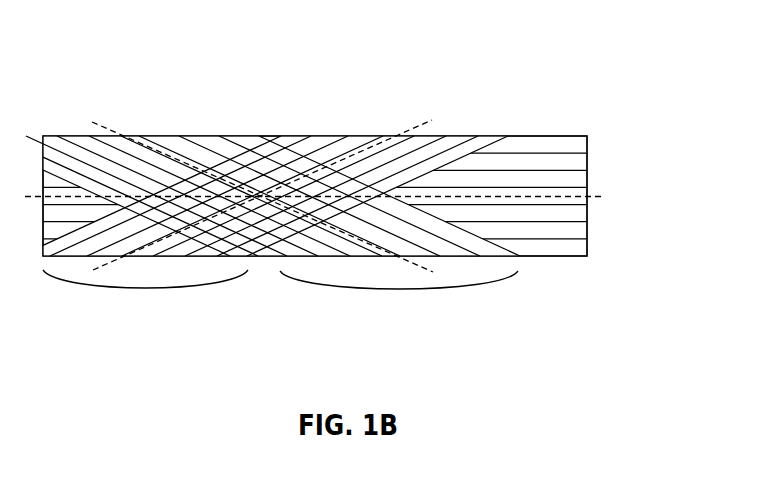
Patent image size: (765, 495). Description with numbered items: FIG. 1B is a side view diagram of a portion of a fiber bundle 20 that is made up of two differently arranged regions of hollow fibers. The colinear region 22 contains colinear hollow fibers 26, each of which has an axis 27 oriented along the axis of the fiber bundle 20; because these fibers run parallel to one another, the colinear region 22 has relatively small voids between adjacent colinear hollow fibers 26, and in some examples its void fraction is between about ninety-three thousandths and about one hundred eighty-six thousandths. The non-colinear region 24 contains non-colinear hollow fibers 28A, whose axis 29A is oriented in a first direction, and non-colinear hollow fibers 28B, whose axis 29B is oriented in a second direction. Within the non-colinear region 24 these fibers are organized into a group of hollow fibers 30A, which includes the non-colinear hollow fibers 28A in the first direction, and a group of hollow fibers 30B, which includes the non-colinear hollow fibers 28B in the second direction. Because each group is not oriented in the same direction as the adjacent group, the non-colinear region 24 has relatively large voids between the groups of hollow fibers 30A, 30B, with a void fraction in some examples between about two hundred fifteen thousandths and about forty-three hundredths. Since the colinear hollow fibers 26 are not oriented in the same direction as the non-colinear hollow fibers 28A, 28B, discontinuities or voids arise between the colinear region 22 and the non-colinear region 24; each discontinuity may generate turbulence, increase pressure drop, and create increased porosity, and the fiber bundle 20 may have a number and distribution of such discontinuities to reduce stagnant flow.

The fiber bundle 20 is at (566, 24).
The colinear region 22 is at (617, 93).
The non-colinear region 24 is at (415, 75).
The colinear hollow fibers 26 is at (586, 138).
The axis 27 is at (596, 196).
The non-colinear hollow fibers 28A is at (290, 136).
The non-colinear hollow fibers 28B is at (202, 136).
The axis 29A is at (426, 122).
The axis 29B is at (92, 122).
The group of hollow fibers 30A is at (145, 288).
The group of hollow fibers 30B is at (398, 288).